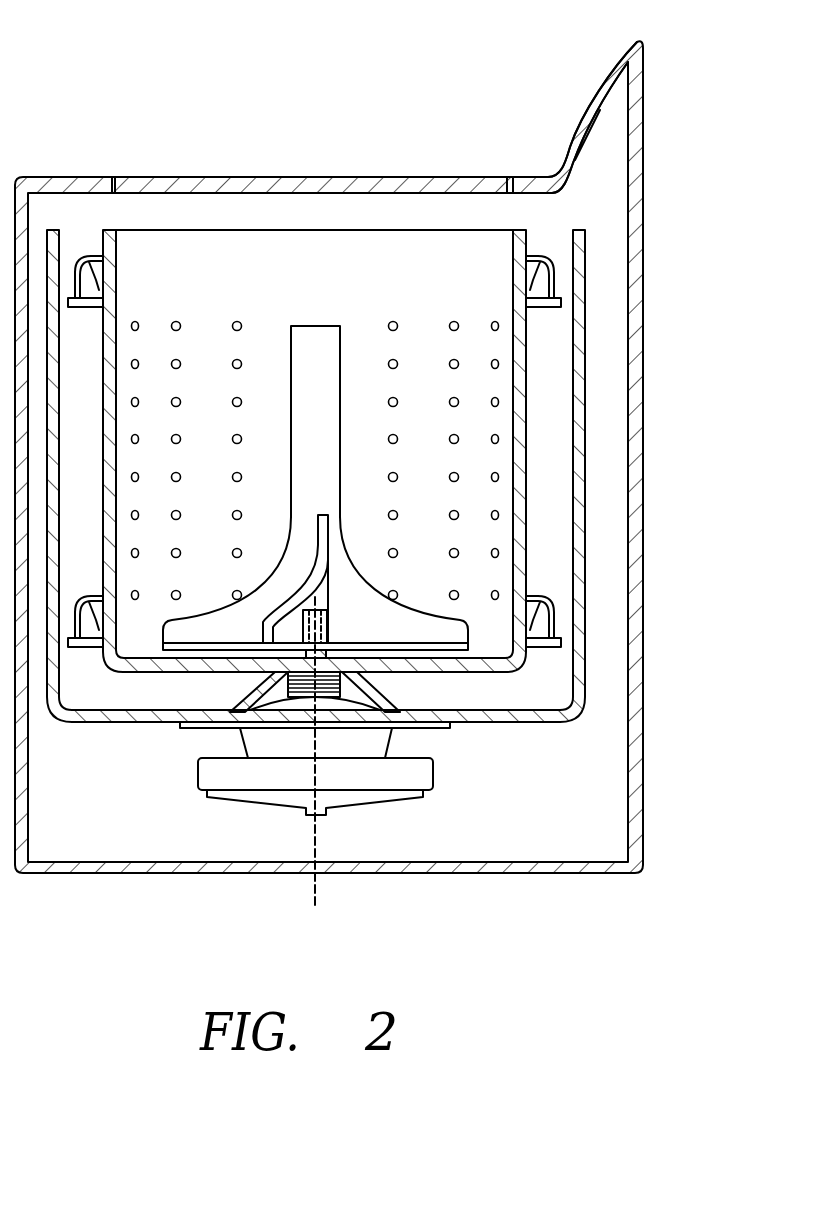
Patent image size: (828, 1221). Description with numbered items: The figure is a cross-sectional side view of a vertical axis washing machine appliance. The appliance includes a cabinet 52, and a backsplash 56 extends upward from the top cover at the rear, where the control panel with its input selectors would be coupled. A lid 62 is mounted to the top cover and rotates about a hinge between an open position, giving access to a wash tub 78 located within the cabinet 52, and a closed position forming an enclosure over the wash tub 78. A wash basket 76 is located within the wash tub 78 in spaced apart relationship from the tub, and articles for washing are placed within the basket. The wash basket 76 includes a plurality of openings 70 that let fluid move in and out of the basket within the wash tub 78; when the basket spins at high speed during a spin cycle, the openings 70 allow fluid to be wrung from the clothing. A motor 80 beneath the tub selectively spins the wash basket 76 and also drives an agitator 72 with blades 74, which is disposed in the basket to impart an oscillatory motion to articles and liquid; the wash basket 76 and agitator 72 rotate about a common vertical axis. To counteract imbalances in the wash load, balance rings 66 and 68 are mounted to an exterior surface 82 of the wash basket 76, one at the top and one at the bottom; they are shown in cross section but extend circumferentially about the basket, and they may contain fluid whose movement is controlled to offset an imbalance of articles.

The cabinet 52 is at (643, 465).
The backsplash 56 is at (573, 98).
The lid 62 is at (232, 177).
The balance ring 66 is at (538, 253).
The balance ring 68 is at (545, 598).
The openings 70 is at (175, 321).
The agitator 72 is at (315, 340).
The blades 74 is at (387, 608).
The wash basket 76 is at (100, 241).
The wash tub 78 is at (101, 723).
The motor 80 is at (420, 773).
The exterior surface 82 is at (530, 388).